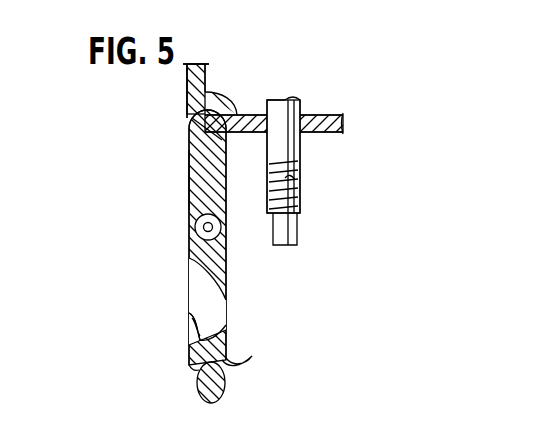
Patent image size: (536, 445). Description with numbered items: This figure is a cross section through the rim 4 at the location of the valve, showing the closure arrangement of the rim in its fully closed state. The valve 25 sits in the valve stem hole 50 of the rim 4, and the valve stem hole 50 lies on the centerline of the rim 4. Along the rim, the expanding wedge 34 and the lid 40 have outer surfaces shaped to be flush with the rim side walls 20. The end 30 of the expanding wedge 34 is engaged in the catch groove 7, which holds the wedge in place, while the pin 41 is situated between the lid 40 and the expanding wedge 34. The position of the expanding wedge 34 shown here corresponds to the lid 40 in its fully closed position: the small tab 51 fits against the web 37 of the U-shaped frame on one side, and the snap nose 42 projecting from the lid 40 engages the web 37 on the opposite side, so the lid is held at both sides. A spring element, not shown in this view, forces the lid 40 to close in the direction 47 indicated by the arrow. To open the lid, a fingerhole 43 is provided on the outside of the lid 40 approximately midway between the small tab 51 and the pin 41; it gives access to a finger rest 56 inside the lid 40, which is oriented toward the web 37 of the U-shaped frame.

The rim 4 is at (158, 100).
The catch groove 7 is at (218, 98).
The rim side walls 20 is at (190, 113).
The valve 25 is at (300, 183).
The end of the expanding wedge 30 is at (232, 110).
The expanding wedge 34 is at (190, 160).
The web of the U-shaped frame 37 is at (222, 398).
The lid 40 is at (230, 263).
The pin 41 is at (204, 227).
The snap nose 42 is at (252, 362).
The fingerhole 43 is at (200, 277).
The direction 47 is at (175, 328).
The valve stem hole 50 is at (328, 149).
The small tab 51 is at (193, 375).
The finger rest 56 is at (220, 323).